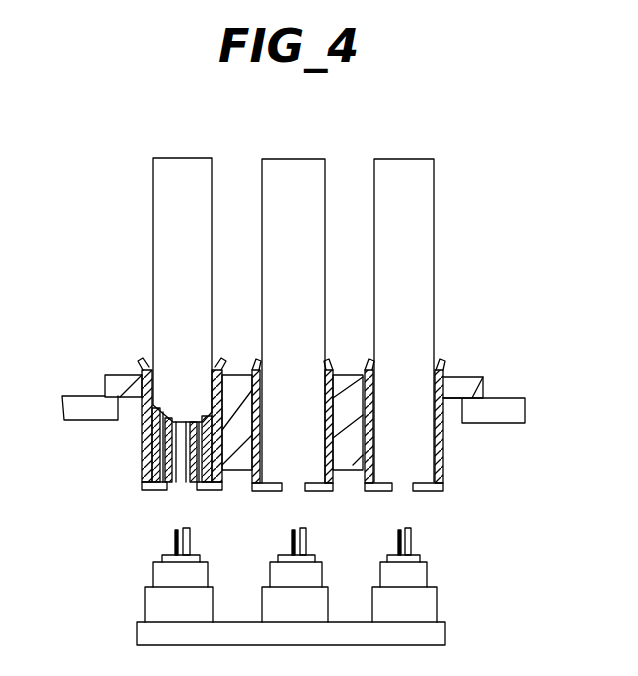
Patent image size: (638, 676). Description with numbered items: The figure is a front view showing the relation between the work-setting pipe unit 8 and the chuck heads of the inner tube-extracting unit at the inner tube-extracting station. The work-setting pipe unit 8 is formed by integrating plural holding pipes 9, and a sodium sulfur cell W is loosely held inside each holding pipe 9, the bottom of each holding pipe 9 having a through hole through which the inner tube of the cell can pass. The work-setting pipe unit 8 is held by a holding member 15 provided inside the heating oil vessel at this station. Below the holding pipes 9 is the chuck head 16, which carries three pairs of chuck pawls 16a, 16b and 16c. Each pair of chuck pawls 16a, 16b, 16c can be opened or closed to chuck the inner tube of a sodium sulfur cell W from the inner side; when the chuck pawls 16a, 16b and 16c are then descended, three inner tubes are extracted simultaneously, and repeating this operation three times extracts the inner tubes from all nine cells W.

The sodium sulfur cell W is at (407, 167).
The work-setting pipe unit 8 is at (467, 380).
The holding member 15 is at (510, 408).
The holding pipe 9 is at (443, 445).
The chuck head 16 is at (449, 620).
The chuck pawls 16a is at (410, 537).
The chuck pawls 16b is at (305, 533).
The chuck pawls 16c is at (188, 532).